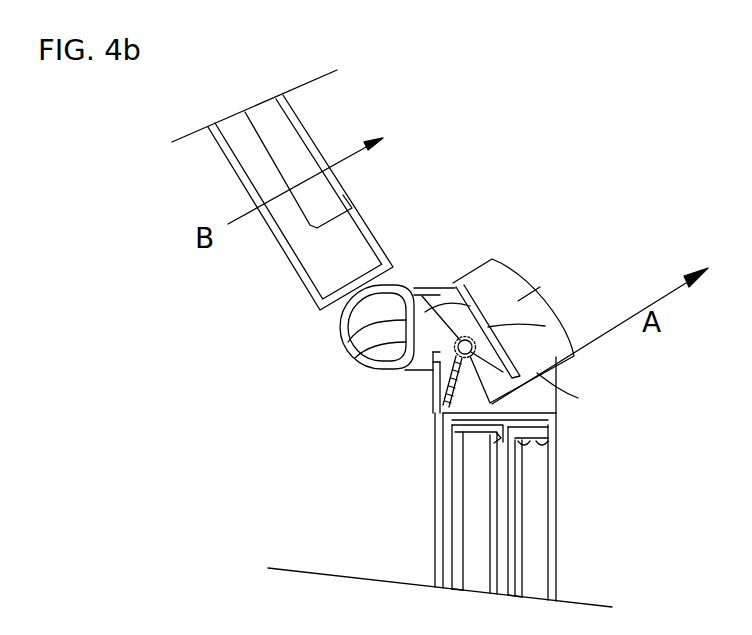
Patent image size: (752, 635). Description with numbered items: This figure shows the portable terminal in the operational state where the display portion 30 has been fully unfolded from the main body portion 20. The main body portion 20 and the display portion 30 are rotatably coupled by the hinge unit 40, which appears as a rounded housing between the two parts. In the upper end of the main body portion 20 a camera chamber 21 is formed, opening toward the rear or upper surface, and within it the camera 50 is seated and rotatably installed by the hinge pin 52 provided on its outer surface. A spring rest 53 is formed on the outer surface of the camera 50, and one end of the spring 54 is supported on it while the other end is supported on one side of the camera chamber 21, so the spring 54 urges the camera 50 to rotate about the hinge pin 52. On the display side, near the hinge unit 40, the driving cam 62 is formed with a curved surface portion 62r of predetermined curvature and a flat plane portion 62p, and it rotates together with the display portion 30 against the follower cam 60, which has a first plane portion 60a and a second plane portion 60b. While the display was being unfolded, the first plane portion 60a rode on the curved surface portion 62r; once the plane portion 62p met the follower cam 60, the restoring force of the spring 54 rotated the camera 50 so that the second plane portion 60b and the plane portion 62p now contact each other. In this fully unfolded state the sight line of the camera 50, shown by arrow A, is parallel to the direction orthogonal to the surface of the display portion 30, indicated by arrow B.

The main body portion 20 is at (556, 557).
The camera chamber 21 is at (440, 404).
The display portion 30 is at (219, 145).
The hinge unit 40 is at (342, 323).
The camera 50 is at (553, 299).
The hinge pin 52 is at (557, 310).
The spring rest 53 is at (520, 383).
The spring 54 is at (433, 373).
The follower cam 60 is at (294, 372).
The first plane portion 60a is at (372, 368).
The second plane portion 60b is at (358, 345).
The driving cam 62 is at (492, 243).
The curved surface portion 62r is at (413, 284).
The plane portion 62p is at (466, 336).